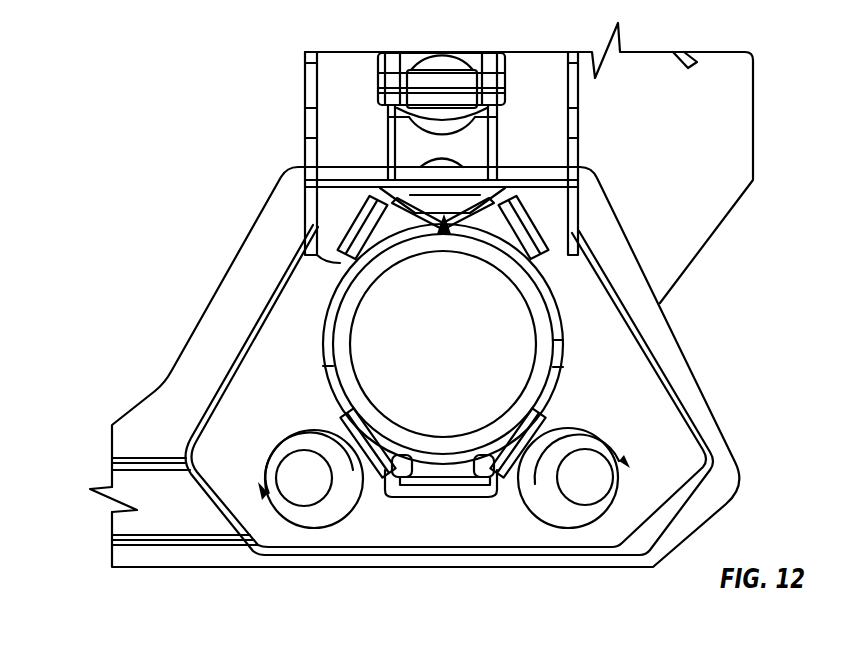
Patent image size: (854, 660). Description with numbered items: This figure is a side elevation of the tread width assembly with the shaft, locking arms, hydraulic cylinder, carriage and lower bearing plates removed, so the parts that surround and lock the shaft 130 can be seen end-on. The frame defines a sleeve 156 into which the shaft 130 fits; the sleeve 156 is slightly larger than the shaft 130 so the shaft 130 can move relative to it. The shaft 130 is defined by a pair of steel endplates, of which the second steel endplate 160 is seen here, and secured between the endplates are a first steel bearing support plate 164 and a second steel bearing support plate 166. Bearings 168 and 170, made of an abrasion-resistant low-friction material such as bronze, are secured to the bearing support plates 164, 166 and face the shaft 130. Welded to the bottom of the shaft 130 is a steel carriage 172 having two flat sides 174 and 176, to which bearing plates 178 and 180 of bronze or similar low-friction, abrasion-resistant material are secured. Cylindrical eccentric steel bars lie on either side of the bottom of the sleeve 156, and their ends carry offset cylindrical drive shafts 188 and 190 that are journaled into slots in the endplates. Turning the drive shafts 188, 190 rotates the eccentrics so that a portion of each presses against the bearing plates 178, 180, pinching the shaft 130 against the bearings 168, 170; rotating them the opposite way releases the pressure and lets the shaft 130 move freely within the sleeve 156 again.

The shaft 130 is at (557, 342).
The sleeve 156 is at (425, 263).
The second steel endplate 160 is at (408, 348).
The first steel bearing support plate 164 is at (362, 232).
The second steel bearing support plate 166 is at (547, 243).
The bearing 168 is at (388, 192).
The bearing 170 is at (452, 236).
The steel carriage 172 is at (442, 483).
The flat side 174 is at (365, 475).
The flat side 176 is at (547, 480).
The bearing plate 178 is at (420, 490).
The bearing plate 180 is at (470, 470).
The offset cylindrical drive shaft 188 is at (295, 478).
The offset cylindrical drive shaft 190 is at (593, 482).